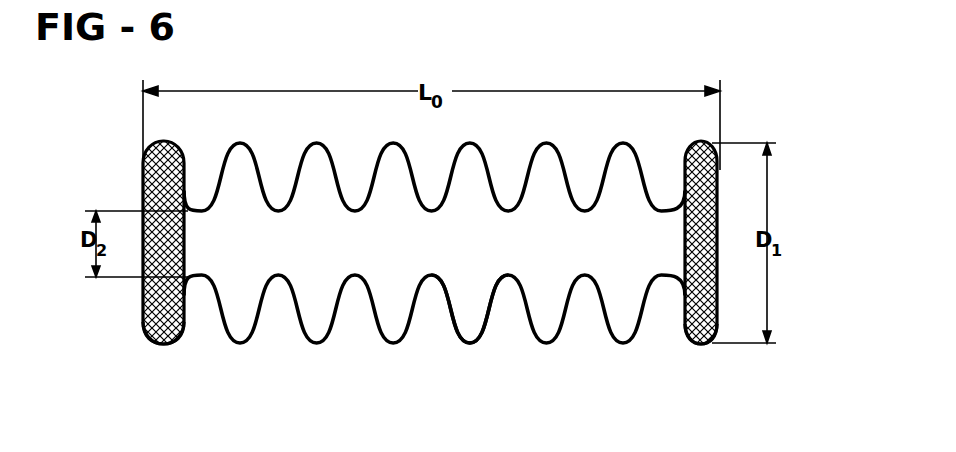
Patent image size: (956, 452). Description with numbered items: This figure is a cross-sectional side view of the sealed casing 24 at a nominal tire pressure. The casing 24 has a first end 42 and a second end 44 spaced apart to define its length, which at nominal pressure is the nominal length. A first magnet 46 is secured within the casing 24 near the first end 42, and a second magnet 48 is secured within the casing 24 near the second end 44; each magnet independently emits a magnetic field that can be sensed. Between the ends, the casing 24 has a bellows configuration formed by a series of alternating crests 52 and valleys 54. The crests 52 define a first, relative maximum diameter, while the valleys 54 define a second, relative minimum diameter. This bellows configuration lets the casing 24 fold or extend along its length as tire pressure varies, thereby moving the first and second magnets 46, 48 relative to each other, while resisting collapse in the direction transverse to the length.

The casing 24 is at (548, 258).
The first end 42 is at (143, 287).
The second end 44 is at (717, 287).
The first magnet 46 is at (149, 327).
The second magnet 48 is at (698, 344).
The crests 52 is at (378, 344).
The valleys 54 is at (509, 278).